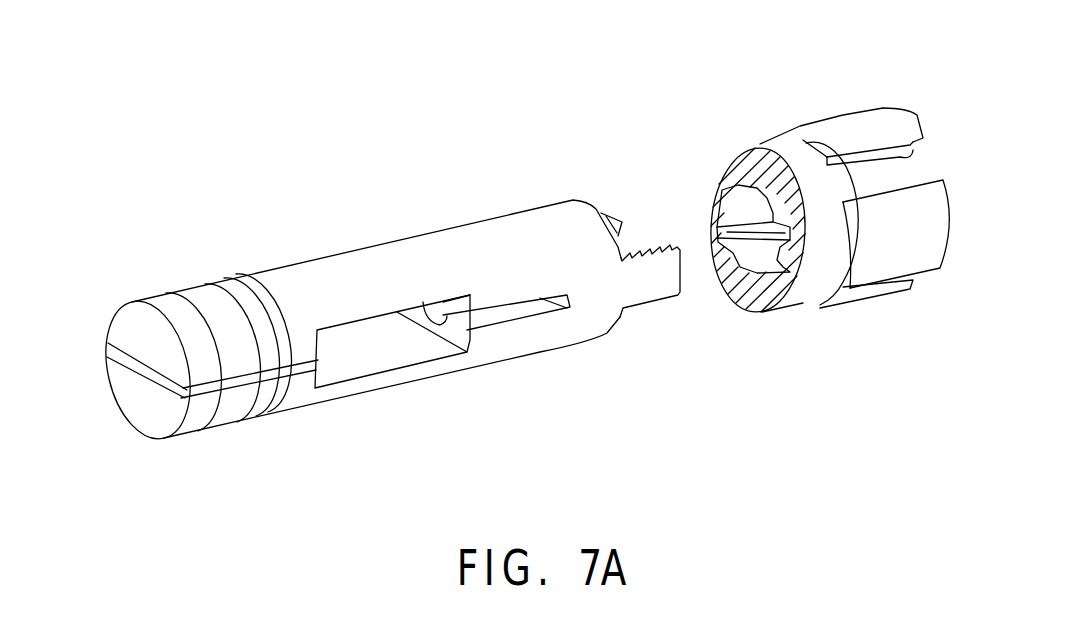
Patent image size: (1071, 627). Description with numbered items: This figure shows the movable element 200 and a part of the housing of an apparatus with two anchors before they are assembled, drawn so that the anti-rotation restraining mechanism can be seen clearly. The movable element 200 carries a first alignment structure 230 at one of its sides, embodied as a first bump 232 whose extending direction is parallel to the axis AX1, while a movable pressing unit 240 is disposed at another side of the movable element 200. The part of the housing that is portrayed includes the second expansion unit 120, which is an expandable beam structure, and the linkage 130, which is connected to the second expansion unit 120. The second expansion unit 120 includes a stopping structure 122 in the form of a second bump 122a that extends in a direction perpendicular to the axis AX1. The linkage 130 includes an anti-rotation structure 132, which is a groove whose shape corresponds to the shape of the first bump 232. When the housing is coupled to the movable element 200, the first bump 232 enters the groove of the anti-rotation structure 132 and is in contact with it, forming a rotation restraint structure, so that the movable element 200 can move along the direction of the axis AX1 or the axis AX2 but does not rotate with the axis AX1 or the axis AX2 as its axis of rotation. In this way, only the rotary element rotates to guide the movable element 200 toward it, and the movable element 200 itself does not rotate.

The movable element 200 is at (415, 203).
The movable pressing unit 240 is at (160, 295).
The first bump 232 is at (632, 285).
The first alignment structure 230 is at (659, 310).
The linkage 130 is at (774, 157).
The anti-rotation structure 132 is at (727, 224).
The second expansion unit 120 is at (897, 265).
The second bump 122a is at (913, 248).
The stopping structure 122 is at (861, 149).
The axis AX1 is at (682, 246).
The axis AX2 is at (132, 375).